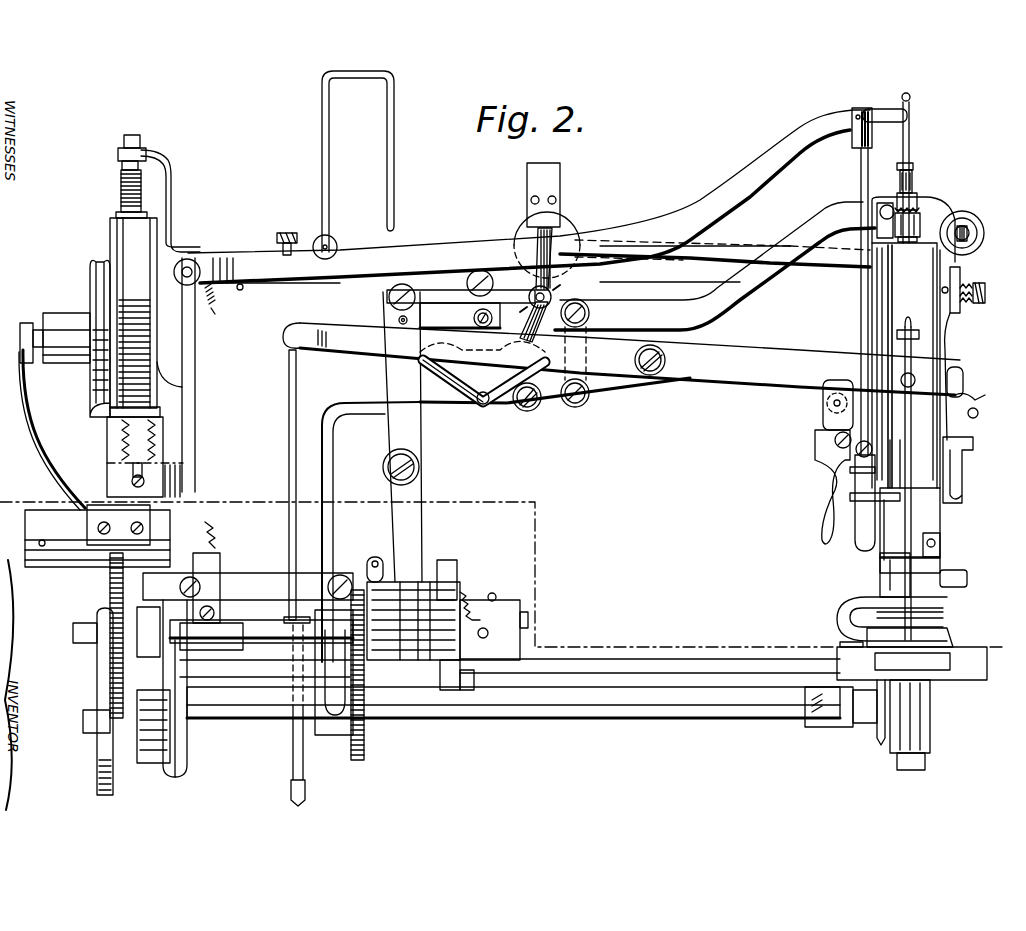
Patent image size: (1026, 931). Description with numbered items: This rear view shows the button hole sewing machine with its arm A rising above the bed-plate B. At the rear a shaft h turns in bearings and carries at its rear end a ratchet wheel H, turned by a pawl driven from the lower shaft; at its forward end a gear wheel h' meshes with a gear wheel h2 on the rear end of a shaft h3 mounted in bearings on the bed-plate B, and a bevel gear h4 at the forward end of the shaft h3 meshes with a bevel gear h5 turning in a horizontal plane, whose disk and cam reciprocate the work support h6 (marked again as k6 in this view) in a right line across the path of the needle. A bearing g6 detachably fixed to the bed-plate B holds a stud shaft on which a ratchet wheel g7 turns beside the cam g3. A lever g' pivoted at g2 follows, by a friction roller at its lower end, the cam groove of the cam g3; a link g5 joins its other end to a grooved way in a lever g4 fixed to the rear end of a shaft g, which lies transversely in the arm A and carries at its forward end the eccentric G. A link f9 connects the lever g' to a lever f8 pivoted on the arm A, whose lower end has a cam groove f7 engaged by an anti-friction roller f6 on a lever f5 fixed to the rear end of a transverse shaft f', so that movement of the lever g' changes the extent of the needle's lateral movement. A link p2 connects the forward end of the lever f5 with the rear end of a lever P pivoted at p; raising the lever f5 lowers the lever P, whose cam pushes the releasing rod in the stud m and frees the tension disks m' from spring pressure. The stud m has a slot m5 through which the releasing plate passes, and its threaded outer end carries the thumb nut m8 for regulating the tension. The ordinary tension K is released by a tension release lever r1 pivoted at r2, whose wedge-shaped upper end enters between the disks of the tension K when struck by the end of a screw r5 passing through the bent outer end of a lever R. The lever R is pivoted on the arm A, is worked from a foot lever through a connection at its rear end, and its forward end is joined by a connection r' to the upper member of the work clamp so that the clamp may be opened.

The arm A is at (528, 386).
The bed-plate B is at (638, 663).
The eccentric G is at (549, 226).
The shaft g is at (568, 272).
The lever g' is at (402, 437).
The pivot g2 is at (412, 474).
The cam g3 is at (435, 655).
The lever g4 is at (551, 291).
The link g5 is at (428, 295).
The bearing g6 is at (482, 610).
The ratchet wheel g7 is at (442, 703).
The shaft f' is at (564, 387).
The lever f5 is at (514, 410).
The anti-friction roller f6 is at (482, 402).
The cam groove f7 is at (463, 383).
The lever f8 is at (482, 371).
The link f9 is at (440, 317).
The ratchet wheel H is at (110, 587).
The shaft h is at (248, 608).
The gear wheel h' is at (361, 561).
The gear wheel h2 is at (343, 740).
The shaft h3 is at (617, 717).
The bevel gear h4 is at (877, 737).
The bevel gear h5 is at (940, 680).
The work support h6 is at (953, 600).
The feed plate k6 is at (955, 640).
The tension K is at (958, 303).
The stud m is at (972, 221).
The tension disks m' is at (984, 241).
The slot m5 is at (963, 220).
The thumb nut m8 is at (963, 250).
The lever P is at (820, 217).
The pivot p is at (887, 206).
The link p2 is at (640, 372).
The lever R is at (635, 360).
The connection r' is at (959, 408).
The tension release lever r1 is at (911, 455).
The pivot r2 is at (950, 425).
The screw r5 is at (968, 387).